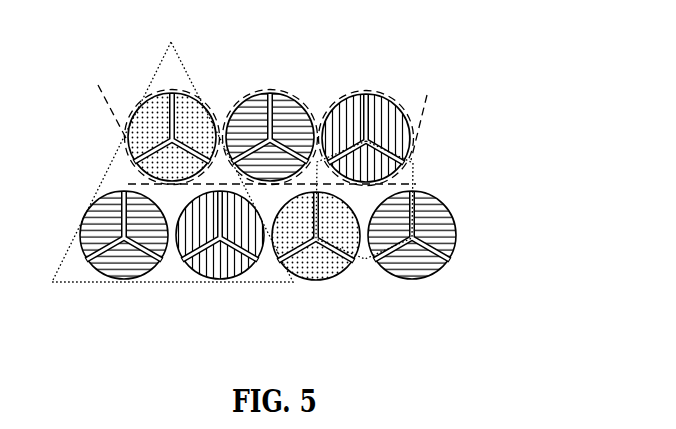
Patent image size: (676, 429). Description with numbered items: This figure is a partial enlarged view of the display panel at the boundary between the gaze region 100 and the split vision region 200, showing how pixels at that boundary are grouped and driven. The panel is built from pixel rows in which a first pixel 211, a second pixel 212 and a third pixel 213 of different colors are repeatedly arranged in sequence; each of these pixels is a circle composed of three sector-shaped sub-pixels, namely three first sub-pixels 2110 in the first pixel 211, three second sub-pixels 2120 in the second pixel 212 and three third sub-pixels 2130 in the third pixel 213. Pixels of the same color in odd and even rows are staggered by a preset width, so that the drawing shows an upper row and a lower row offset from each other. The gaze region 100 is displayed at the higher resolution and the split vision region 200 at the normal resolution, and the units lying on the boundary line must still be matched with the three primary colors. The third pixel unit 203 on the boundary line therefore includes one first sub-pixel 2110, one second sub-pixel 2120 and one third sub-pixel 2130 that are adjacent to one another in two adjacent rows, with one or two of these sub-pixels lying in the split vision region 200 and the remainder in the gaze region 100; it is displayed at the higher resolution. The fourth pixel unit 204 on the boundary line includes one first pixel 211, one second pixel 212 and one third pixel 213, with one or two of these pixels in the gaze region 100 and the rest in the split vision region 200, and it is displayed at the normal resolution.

The gaze region 100 is at (412, 89).
The split vision region 200 is at (440, 146).
The third pixel unit 203 is at (366, 260).
The fourth pixel unit 204 is at (107, 171).
The first pixel 211 is at (376, 88).
The second pixel 212 is at (183, 88).
The third pixel 213 is at (280, 88).
The first sub-pixel 2110 is at (220, 272).
The second sub-pixel 2120 is at (318, 272).
The third sub-pixel 2130 is at (127, 272).